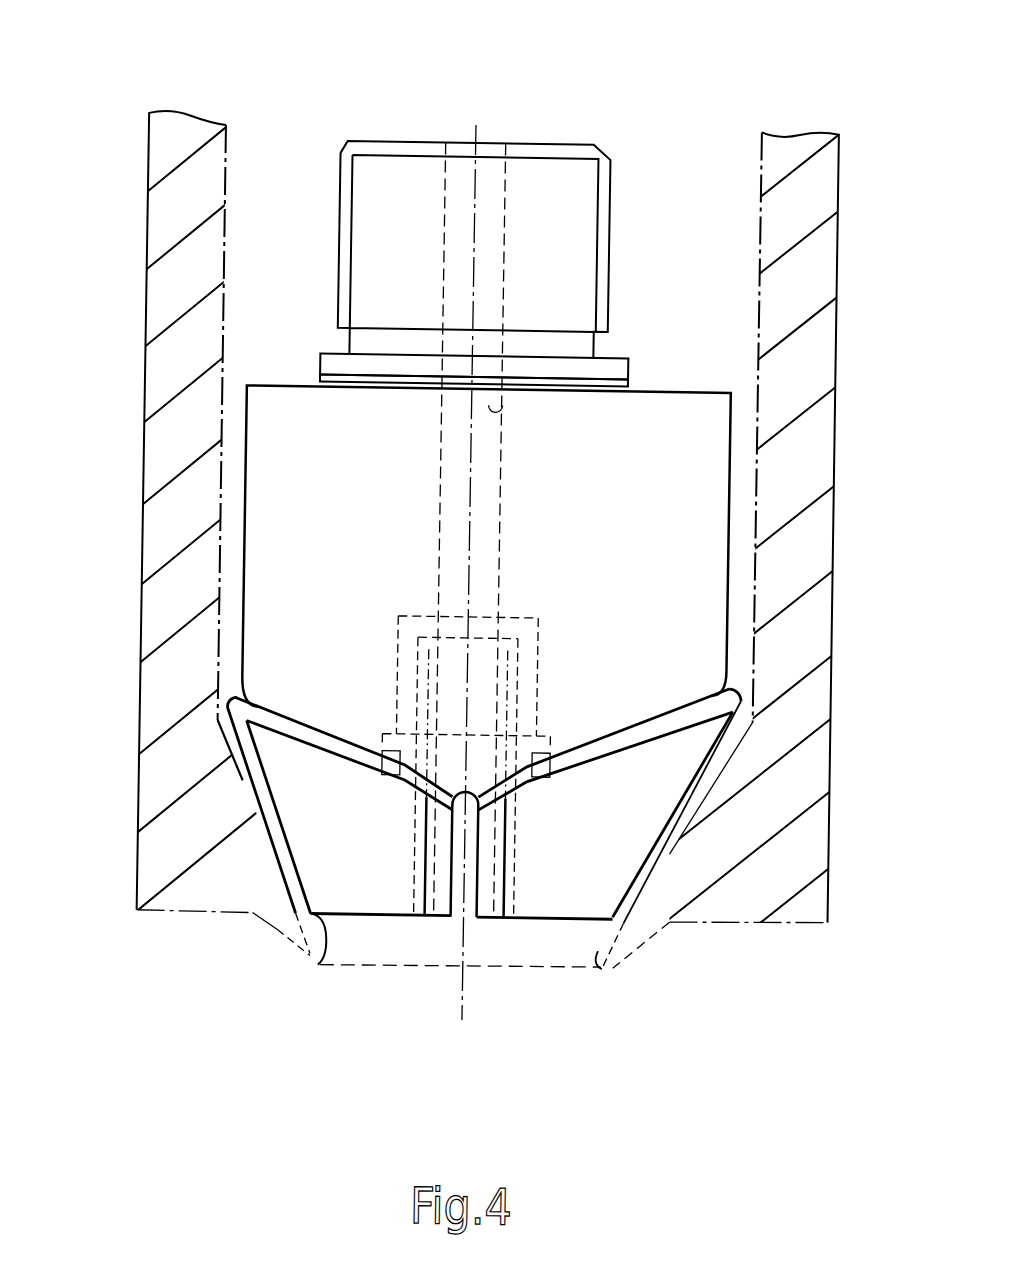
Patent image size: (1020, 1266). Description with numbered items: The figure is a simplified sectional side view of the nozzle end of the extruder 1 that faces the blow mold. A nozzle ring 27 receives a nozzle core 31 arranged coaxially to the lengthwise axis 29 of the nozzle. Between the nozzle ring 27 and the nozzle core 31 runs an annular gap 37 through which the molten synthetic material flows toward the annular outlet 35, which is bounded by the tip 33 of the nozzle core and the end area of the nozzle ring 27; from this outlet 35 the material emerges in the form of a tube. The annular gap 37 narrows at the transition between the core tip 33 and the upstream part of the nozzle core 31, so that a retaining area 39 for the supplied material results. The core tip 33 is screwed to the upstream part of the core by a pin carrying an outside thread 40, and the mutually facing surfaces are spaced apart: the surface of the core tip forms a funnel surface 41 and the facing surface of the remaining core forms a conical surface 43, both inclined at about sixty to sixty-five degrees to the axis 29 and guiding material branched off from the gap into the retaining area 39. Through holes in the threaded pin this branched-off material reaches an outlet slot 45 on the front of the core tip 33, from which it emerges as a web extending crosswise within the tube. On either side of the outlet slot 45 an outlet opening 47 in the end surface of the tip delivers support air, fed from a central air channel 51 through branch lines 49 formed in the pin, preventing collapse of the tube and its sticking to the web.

The extruder 1 is at (488, 581).
The nozzle ring 27 is at (798, 763).
The lengthwise axis 29 is at (480, 122).
The nozzle core 31 is at (700, 434).
The core tip 33 is at (648, 790).
The annular outlet 35 is at (330, 964).
The annular gap 37 is at (235, 462).
The retaining area 39 is at (241, 691).
The outside thread 40 is at (537, 671).
The funnel surface 41 is at (322, 752).
The conical surface 43 is at (299, 710).
The outlet slot 45 is at (469, 897).
The outlet opening 47 is at (437, 918).
The branch lines 49 is at (410, 653).
The central air channel 51 is at (510, 418).